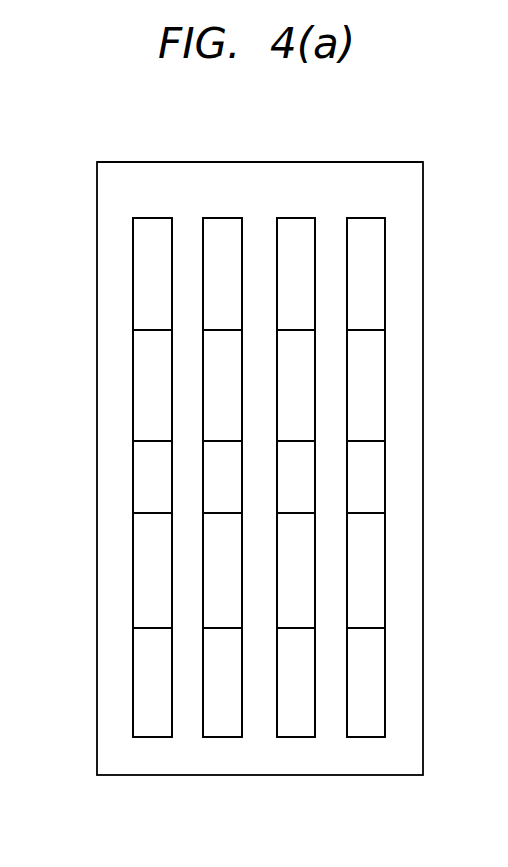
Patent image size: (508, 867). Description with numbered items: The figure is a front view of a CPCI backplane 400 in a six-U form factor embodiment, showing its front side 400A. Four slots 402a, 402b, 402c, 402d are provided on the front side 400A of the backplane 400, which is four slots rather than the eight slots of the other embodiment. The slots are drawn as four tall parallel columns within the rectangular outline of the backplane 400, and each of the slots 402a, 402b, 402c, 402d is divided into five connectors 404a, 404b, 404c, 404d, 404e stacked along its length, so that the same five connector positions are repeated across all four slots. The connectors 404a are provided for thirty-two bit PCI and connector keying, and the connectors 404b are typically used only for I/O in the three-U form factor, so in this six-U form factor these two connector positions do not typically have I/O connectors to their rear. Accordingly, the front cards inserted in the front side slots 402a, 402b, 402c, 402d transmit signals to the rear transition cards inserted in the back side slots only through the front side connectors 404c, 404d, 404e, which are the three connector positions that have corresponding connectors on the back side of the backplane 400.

The backplane 400 is at (165, 163).
The front side 400A is at (278, 166).
The slot 402a is at (153, 218).
The slot 402b is at (224, 218).
The slot 402c is at (297, 218).
The slot 402d is at (367, 218).
The connector 404a is at (138, 707).
The connector 404b is at (138, 593).
The connector 404c is at (215, 495).
The connector 404d is at (138, 410).
The connector 404e is at (138, 298).